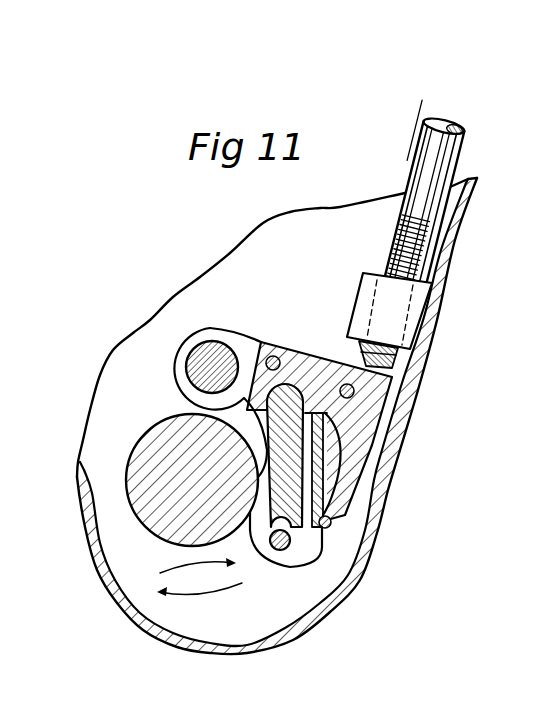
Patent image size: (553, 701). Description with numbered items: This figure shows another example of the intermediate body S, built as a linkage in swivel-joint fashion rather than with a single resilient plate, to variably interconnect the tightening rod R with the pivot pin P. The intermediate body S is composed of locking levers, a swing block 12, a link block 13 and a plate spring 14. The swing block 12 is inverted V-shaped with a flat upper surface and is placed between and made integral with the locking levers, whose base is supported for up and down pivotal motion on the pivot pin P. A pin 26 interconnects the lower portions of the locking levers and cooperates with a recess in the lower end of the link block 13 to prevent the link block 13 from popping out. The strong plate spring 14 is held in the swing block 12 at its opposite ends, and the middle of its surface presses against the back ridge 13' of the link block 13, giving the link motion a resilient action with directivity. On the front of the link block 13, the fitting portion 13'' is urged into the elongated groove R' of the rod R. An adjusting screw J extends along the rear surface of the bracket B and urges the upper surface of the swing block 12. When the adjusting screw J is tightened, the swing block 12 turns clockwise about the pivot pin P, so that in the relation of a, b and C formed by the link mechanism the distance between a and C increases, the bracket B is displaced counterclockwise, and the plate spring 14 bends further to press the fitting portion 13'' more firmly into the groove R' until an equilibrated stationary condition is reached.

The bracket B is at (467, 222).
The adjusting screw J is at (434, 284).
The link mechanism point a is at (213, 345).
The swing block 12 is at (377, 397).
The intermediate body S is at (386, 443).
The back ridge of link block 13' is at (393, 464).
The link block 13 is at (357, 475).
The plate spring 14 is at (321, 510).
The pin 26 is at (289, 548).
The link mechanism point c C is at (250, 527).
The link mechanism point b is at (288, 403).
The pivot pin P is at (188, 352).
The tightening rod R is at (142, 480).
The fitting portion of link block 13'' is at (132, 491).
The elongated groove of rod R' is at (137, 541).